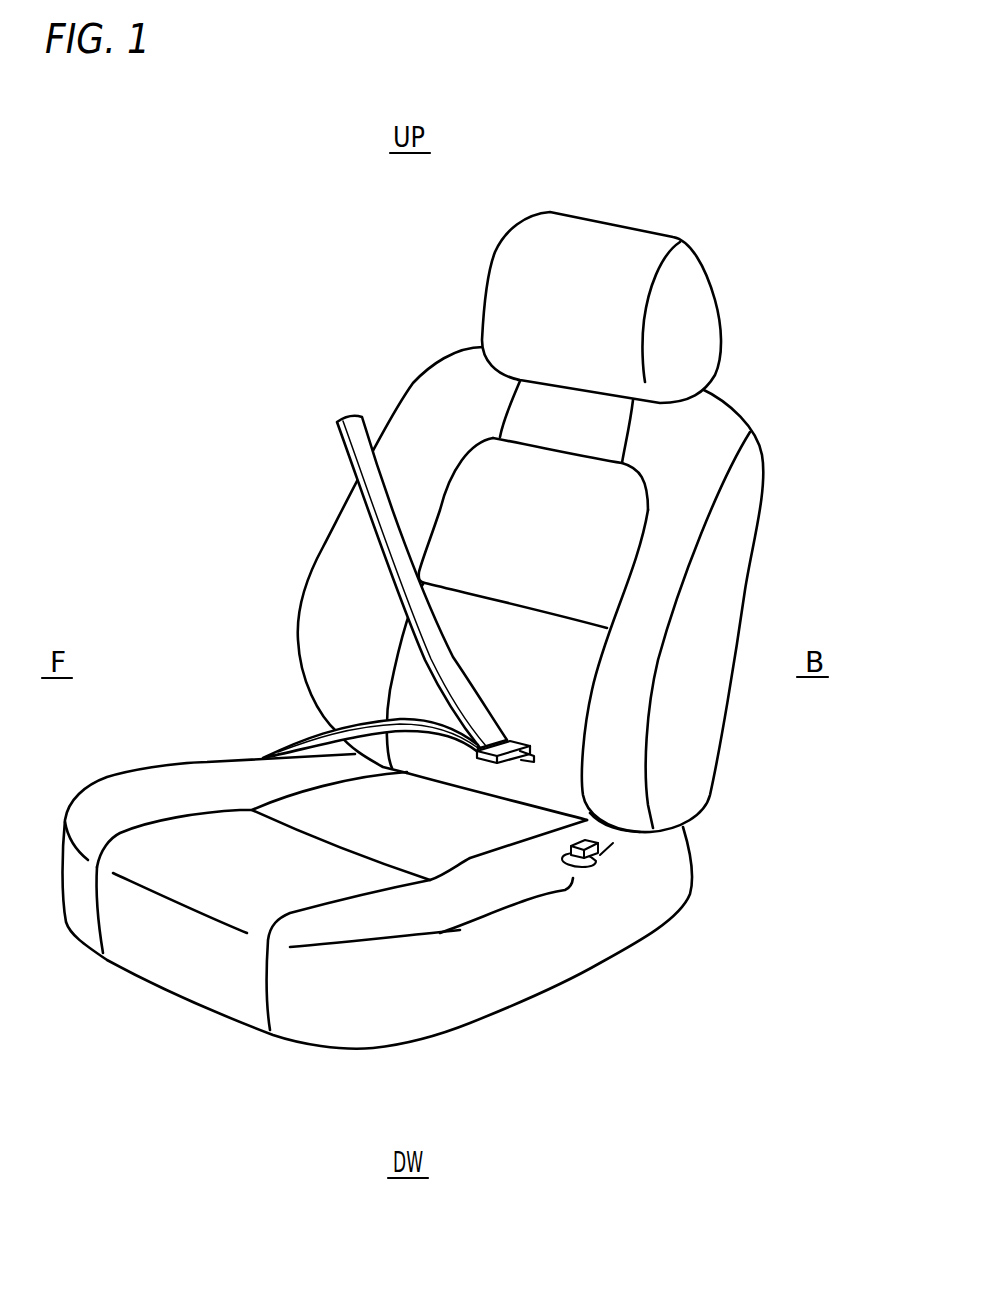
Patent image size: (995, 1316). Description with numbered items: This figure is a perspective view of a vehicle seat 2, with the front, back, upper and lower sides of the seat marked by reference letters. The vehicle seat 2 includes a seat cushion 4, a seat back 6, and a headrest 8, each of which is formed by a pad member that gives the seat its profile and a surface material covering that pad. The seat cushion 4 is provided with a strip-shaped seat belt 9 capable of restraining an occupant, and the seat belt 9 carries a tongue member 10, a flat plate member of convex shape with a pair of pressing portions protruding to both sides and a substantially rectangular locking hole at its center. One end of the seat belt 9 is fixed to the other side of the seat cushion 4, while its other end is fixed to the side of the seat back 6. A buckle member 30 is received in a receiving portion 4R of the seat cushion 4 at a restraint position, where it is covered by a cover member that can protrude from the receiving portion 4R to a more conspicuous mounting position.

The vehicle seat 2 is at (638, 214).
The seat cushion 4 is at (153, 775).
The receiving portion 4R is at (572, 887).
The seat back 6 is at (353, 525).
The headrest 8 is at (513, 273).
The seat belt 9 is at (441, 727).
The tongue member 10 is at (517, 740).
The buckle member 30 is at (597, 863).